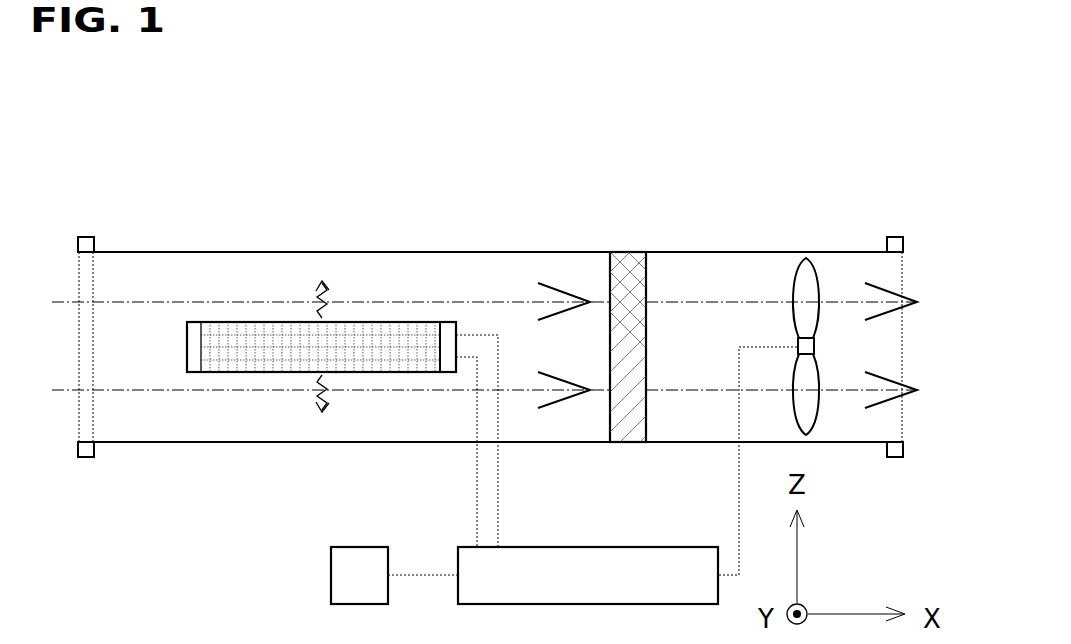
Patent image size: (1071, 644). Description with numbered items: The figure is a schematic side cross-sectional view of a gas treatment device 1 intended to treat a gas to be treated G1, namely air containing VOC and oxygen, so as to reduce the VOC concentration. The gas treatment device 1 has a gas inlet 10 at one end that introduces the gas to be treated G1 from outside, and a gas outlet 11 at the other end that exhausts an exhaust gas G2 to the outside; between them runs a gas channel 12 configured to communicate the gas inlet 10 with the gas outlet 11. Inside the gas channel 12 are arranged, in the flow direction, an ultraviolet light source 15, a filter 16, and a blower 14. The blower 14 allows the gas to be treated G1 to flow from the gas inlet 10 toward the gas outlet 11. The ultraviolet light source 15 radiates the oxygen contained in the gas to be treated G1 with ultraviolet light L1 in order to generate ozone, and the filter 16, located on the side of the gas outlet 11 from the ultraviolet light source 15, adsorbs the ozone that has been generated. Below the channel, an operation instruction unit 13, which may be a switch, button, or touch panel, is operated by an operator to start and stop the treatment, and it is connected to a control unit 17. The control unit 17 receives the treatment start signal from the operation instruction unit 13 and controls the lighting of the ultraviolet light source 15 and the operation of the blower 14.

The gas treatment device 1 is at (118, 153).
The gas inlet 10 is at (77, 413).
The gas outlet 11 is at (905, 415).
The gas channel 12 is at (205, 282).
The operation instruction unit 13 is at (331, 560).
The blower 14 is at (820, 268).
The ultraviolet light source 15 is at (455, 322).
The filter 16 is at (650, 270).
The control unit 17 is at (660, 547).
The ultraviolet light L1 is at (318, 297).
The gas to be treated G1 is at (372, 300).
The exhaust gas G2 is at (725, 302).